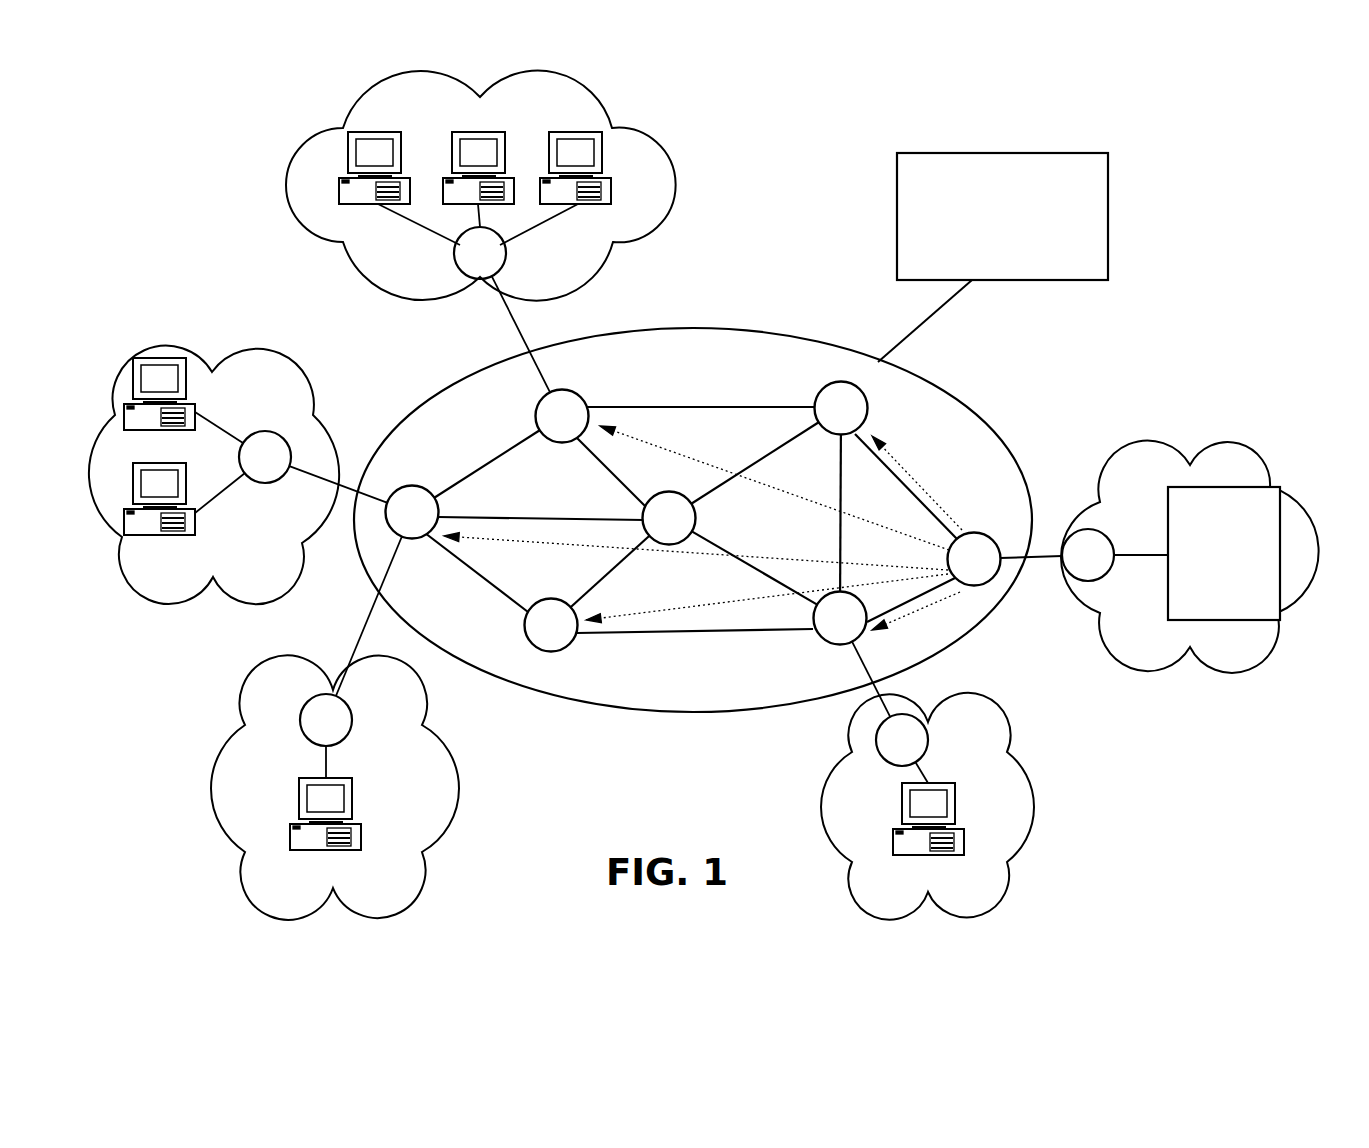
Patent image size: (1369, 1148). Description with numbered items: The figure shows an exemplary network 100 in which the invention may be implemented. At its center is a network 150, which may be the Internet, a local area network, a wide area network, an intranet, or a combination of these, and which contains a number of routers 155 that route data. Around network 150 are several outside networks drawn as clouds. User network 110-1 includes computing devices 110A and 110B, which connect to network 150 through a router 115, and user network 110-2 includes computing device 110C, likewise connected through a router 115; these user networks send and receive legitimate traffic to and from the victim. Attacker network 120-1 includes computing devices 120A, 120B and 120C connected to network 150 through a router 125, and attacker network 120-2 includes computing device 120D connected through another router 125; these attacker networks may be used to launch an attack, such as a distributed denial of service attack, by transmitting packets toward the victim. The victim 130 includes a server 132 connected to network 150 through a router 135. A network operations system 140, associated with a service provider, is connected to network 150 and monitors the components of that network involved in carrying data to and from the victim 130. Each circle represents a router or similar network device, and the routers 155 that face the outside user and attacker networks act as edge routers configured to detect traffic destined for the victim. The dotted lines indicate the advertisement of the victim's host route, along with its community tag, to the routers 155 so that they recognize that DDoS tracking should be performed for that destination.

The network 100 is at (118, 88).
The user network 110-1 is at (250, 346).
The user network 110-2 is at (1033, 798).
The computing device 110A is at (183, 409).
The computing device 110B is at (184, 514).
The computing device 110C is at (928, 837).
The router 115 is at (583, 607).
The attacker network 120-1 is at (655, 144).
The attacker network 120-2 is at (459, 783).
The computing device 120A is at (399, 175).
The computing device 120B is at (478, 166).
The computing device 120C is at (555, 175).
The computing device 120D is at (325, 830).
The router 125 is at (425, 502).
The victim 130 is at (1223, 673).
The server 132 is at (1224, 553).
The router 135 is at (1084, 555).
The network operations system 140 is at (993, 257).
The network 150 is at (672, 326).
The router 155 is at (693, 517).